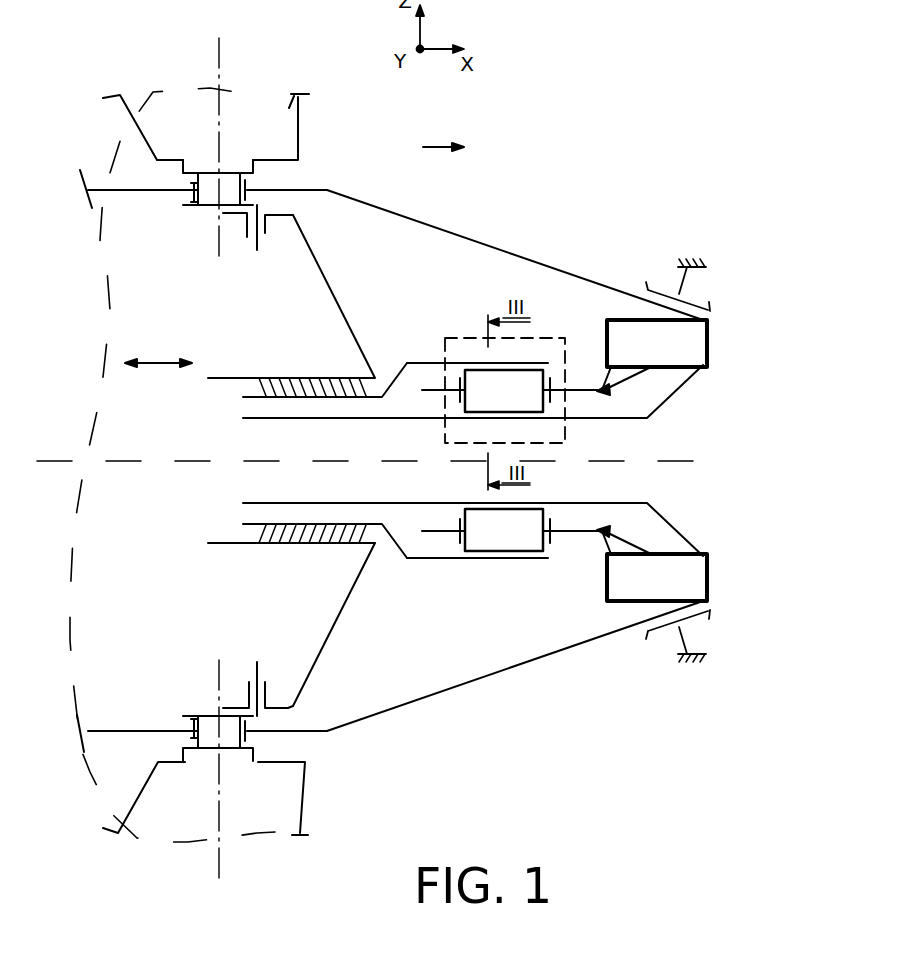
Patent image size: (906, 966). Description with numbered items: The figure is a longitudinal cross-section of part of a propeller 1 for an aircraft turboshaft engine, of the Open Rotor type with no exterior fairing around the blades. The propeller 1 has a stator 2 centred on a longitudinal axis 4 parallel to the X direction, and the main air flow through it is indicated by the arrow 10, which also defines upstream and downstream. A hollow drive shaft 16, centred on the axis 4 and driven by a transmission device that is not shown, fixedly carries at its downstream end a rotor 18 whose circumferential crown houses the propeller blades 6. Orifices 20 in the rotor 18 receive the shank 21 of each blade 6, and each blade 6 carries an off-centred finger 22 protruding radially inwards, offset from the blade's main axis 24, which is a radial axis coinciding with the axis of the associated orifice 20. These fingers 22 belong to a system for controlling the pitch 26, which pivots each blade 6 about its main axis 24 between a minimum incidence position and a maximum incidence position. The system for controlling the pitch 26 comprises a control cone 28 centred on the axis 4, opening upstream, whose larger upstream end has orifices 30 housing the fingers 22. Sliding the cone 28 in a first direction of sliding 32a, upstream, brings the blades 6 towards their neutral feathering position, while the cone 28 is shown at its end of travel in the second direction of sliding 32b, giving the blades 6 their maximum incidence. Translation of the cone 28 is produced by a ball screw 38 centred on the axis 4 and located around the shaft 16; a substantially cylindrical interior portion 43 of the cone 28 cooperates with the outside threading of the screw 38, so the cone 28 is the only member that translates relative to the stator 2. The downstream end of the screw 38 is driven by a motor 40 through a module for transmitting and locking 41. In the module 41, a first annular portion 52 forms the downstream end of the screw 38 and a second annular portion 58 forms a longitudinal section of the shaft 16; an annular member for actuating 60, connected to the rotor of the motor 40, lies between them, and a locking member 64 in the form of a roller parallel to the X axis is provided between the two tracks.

The propeller 1 is at (573, 94).
The stator 2 is at (692, 283).
The longitudinal axis 4 is at (50, 458).
The propeller blades 6 is at (305, 98).
The arrow 10 is at (438, 143).
The drive shaft 16 is at (267, 503).
The rotor 18 is at (464, 233).
The orifices 20 is at (213, 207).
The shank 21 is at (240, 167).
The off-centred finger 22 is at (257, 252).
The main axis 24 is at (220, 50).
The system for controlling the pitch 26 is at (319, 315).
The control cone 28 is at (318, 261).
The orifices 30 is at (261, 231).
The first direction of sliding 32a is at (127, 367).
The second direction of sliding 32b is at (186, 361).
The ball screw 38 is at (254, 397).
The motor 40 is at (693, 335).
The module for transmitting and locking 41 is at (460, 338).
The cylindrical interior portion 43 is at (285, 378).
The first annular portion 52 is at (533, 361).
The second annular portion 58 is at (540, 418).
The member for actuating 60 is at (428, 389).
The locking member 64 is at (530, 400).